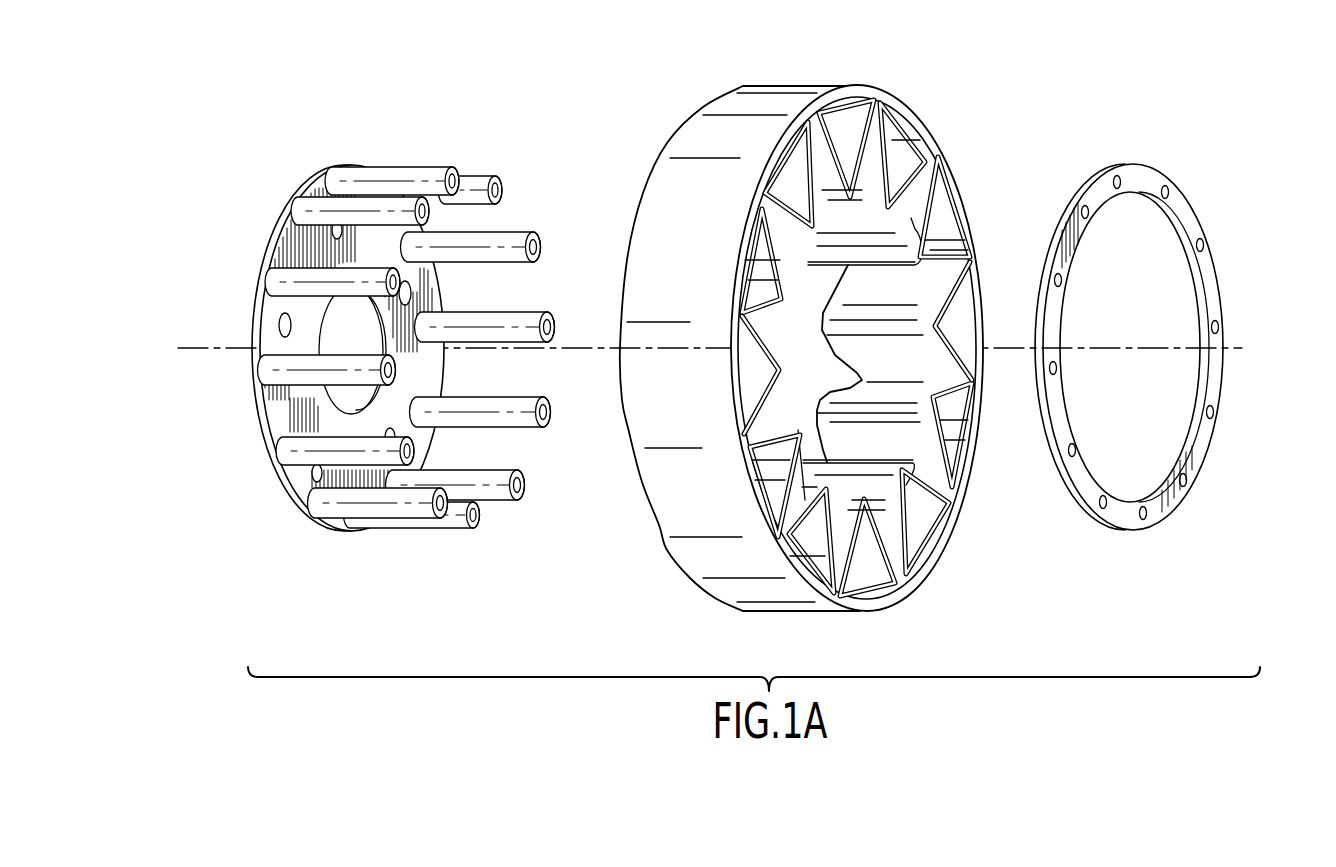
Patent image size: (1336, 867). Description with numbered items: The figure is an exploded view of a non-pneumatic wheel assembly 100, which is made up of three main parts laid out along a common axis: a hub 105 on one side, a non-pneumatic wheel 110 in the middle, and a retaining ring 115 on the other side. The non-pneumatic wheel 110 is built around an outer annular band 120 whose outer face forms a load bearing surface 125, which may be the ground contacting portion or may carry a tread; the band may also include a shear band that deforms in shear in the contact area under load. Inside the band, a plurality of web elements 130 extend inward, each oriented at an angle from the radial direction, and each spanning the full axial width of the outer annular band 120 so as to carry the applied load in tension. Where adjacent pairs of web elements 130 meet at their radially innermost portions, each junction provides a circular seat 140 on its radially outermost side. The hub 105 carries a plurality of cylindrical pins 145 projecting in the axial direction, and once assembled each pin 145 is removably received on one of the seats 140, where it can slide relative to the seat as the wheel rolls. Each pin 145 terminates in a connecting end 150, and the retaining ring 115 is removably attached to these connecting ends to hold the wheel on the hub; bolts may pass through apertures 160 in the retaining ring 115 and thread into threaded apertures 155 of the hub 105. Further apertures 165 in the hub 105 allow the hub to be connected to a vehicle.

The non-pneumatic wheel assembly 100 is at (578, 82).
The hub 105 is at (318, 148).
The non-pneumatic wheel 110 is at (930, 100).
The retaining ring 115 is at (1133, 264).
The outer annular band 120 is at (693, 556).
The load bearing surface 125 is at (688, 140).
The web elements 130 is at (776, 342).
The seat 140 is at (778, 285).
The pins 145 is at (416, 166).
The connecting end 150 is at (510, 177).
The threaded apertures 155 is at (536, 247).
The apertures 160 is at (1208, 245).
The apertures 165 is at (418, 292).